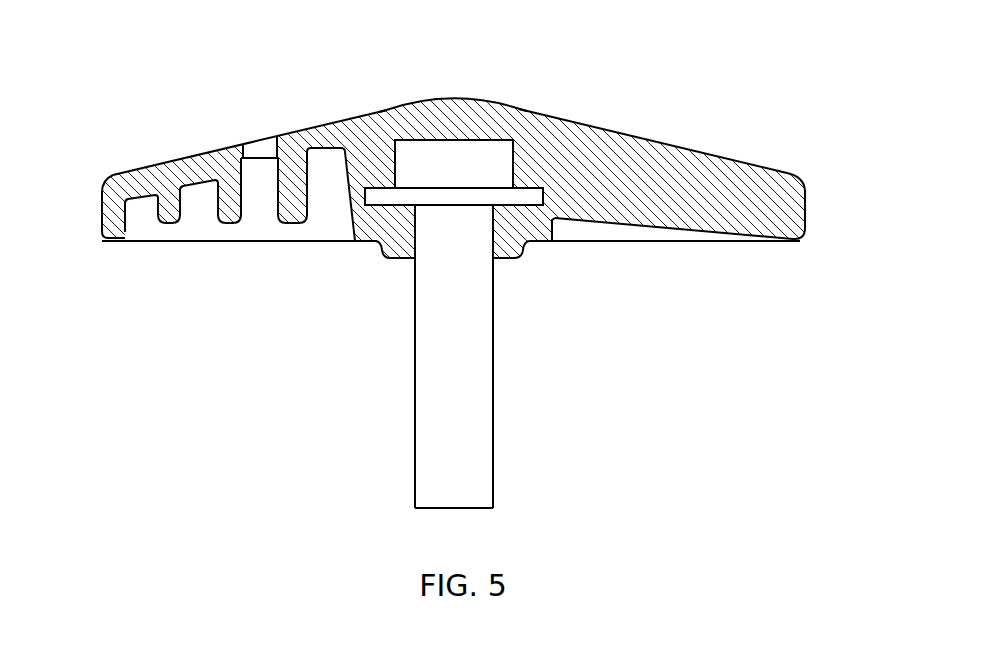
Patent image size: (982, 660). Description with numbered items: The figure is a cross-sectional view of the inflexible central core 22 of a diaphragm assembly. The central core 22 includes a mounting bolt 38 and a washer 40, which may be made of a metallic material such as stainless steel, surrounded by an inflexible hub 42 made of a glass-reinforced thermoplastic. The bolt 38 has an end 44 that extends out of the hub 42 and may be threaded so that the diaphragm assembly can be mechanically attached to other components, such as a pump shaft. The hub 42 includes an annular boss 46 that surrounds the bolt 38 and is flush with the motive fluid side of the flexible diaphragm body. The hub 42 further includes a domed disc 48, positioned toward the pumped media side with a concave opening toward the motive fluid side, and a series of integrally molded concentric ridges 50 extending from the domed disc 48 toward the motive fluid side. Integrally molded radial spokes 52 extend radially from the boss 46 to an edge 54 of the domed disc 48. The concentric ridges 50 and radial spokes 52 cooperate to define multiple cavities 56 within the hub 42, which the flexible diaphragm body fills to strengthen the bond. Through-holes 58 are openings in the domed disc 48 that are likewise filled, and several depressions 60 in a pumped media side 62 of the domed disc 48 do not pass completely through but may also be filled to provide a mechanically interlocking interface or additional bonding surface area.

The inflexible central core 22 is at (838, 72).
The mounting bolt 38 is at (470, 485).
The washer 40 is at (472, 197).
The inflexible hub 42 is at (445, 120).
The end of the bolt 44 is at (494, 518).
The annular boss 46 is at (402, 262).
The domed disc 48 is at (143, 180).
The concentric ridges 50 is at (112, 214).
The radial spokes 52 is at (625, 229).
The edge of the domed disc 54 is at (100, 212).
The cavities 56 is at (140, 217).
The through-holes 58 is at (262, 152).
The depressions 60 is at (383, 112).
The pumped media side of the domed disc 62 is at (577, 118).